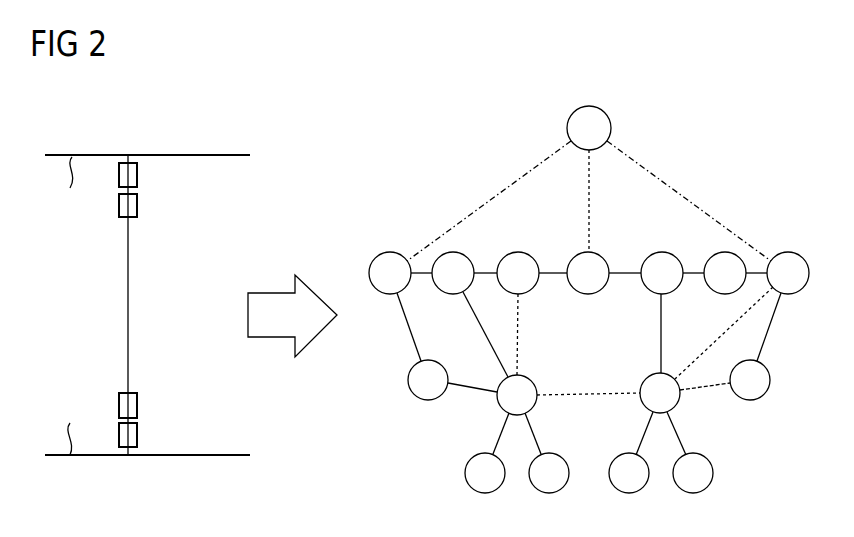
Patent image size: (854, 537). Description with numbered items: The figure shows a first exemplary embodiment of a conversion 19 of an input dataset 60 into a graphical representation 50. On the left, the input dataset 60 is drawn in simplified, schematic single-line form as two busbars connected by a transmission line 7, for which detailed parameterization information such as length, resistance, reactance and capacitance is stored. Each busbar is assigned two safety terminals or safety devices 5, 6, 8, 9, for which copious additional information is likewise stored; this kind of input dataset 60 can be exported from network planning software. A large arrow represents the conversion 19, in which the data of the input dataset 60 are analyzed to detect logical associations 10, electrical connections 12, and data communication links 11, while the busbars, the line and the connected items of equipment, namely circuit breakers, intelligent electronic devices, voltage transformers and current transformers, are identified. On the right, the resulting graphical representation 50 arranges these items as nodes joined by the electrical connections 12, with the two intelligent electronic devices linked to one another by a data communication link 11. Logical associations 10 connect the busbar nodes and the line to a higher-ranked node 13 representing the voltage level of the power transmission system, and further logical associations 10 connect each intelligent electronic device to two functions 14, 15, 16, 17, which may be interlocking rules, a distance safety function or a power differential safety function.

The safety device 5 is at (137, 172).
The safety device 6 is at (137, 202).
The transmission line 7 is at (128, 308).
The safety device 8 is at (137, 402).
The safety device 9 is at (137, 433).
The logical association 10 is at (495, 195).
The data communication link 11 is at (592, 394).
The electrical connection 12 is at (488, 271).
The voltage level 13 is at (579, 139).
The function 14 is at (475, 484).
The function 15 is at (539, 484).
The function 16 is at (619, 484).
The function 17 is at (683, 484).
The conversion 19 is at (270, 337).
The graphical representation 50 is at (700, 133).
The input dataset 60 is at (256, 133).